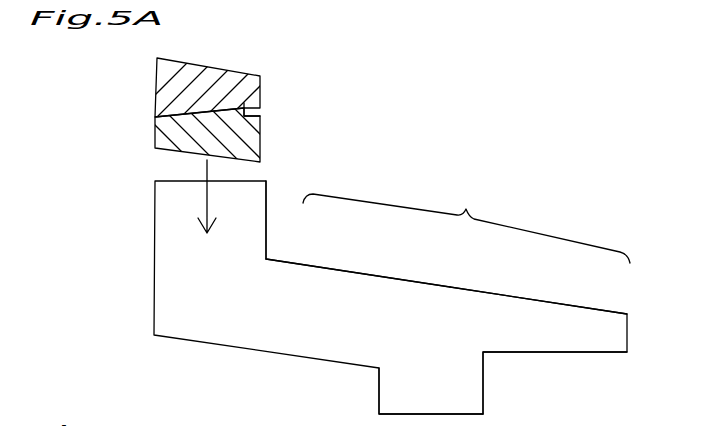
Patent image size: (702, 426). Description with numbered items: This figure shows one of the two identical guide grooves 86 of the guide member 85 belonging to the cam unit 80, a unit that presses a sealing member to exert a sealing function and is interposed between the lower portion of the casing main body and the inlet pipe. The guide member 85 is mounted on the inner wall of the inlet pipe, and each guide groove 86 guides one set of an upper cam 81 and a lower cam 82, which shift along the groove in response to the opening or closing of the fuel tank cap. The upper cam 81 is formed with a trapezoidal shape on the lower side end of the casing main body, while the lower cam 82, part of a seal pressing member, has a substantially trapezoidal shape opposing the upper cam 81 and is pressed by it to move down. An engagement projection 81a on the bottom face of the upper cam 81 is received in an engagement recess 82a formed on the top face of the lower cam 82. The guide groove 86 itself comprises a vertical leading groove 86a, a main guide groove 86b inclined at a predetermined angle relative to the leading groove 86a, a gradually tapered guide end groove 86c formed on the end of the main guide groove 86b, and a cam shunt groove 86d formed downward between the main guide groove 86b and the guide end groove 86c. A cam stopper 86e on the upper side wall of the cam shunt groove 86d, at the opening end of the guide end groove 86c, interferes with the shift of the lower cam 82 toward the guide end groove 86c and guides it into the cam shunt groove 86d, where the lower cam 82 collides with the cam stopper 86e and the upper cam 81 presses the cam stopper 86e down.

The cam unit 80 is at (423, 152).
The upper cam 81 is at (260, 85).
The engagement projection 81a is at (250, 109).
The lower cam 82 is at (260, 148).
The engagement recess 82a is at (250, 114).
The guide member 85 is at (537, 160).
The guide groove 86 is at (438, 297).
The leading groove 86a is at (247, 214).
The main guide groove 86b is at (348, 285).
The guide end groove 86c is at (545, 320).
The cam shunt groove 86d is at (408, 383).
The cam stopper 86e is at (484, 377).